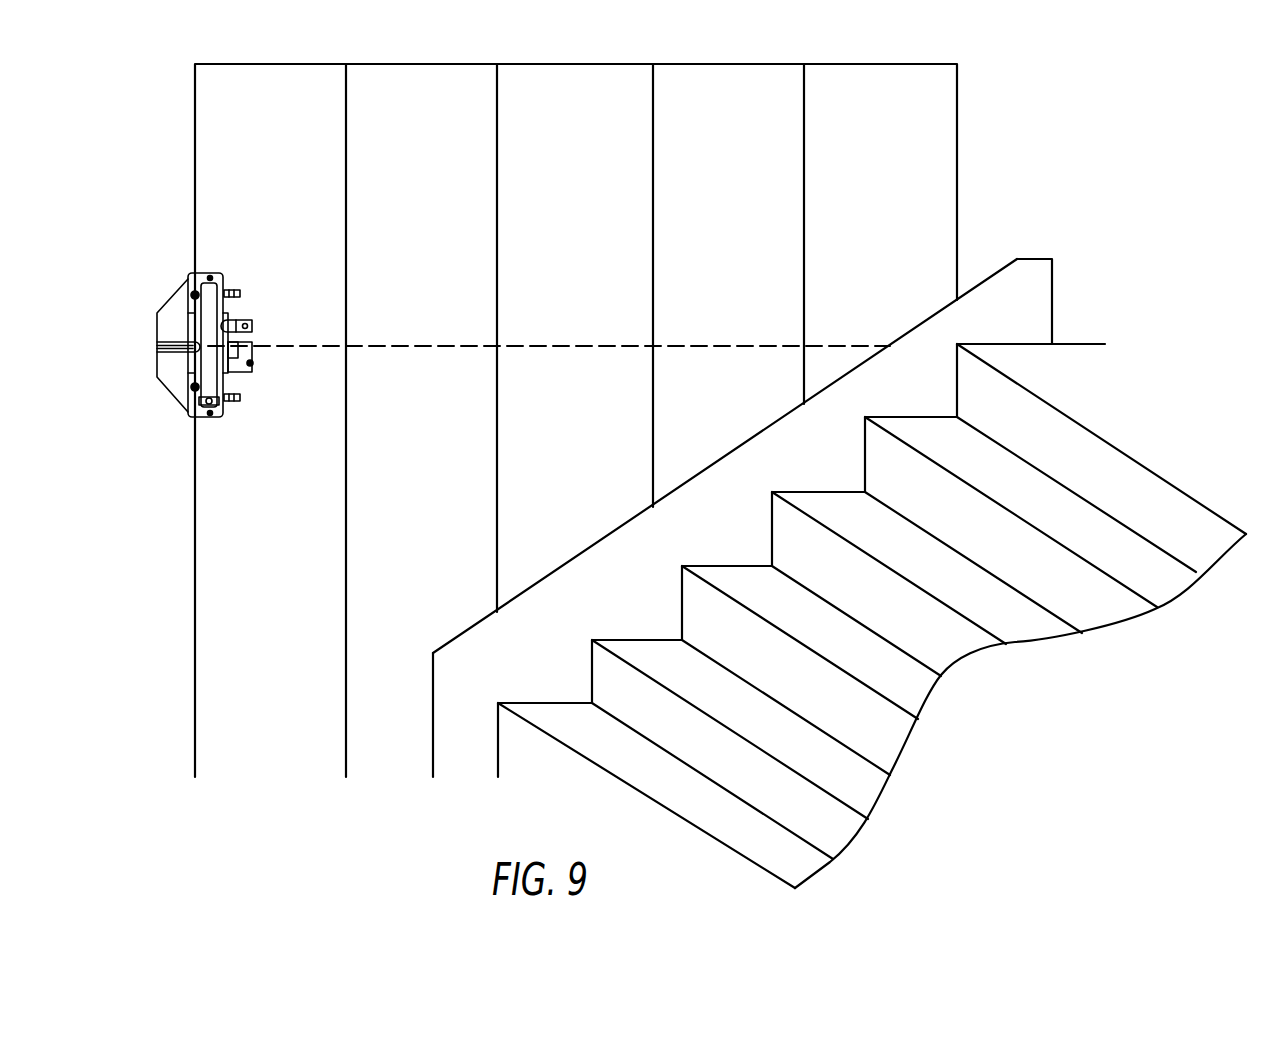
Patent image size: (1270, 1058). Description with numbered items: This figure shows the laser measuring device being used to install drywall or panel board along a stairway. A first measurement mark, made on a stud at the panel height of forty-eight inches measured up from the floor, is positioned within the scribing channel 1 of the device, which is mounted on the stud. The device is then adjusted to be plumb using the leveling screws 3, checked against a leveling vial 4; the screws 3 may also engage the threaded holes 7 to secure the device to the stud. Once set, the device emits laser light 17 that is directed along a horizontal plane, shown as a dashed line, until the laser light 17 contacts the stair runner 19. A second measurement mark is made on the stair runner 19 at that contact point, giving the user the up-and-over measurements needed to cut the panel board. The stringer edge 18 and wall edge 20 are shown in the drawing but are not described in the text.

The scribing channel 1 is at (157, 345).
The leveling screws 3 is at (237, 290).
The leveling vial 4 is at (252, 327).
The threaded holes 7 is at (190, 387).
The laser light 17 is at (580, 345).
The stair stringer line 18 is at (890, 344).
The stair runner 19 is at (1033, 259).
The lower wall edge 20 is at (432, 653).